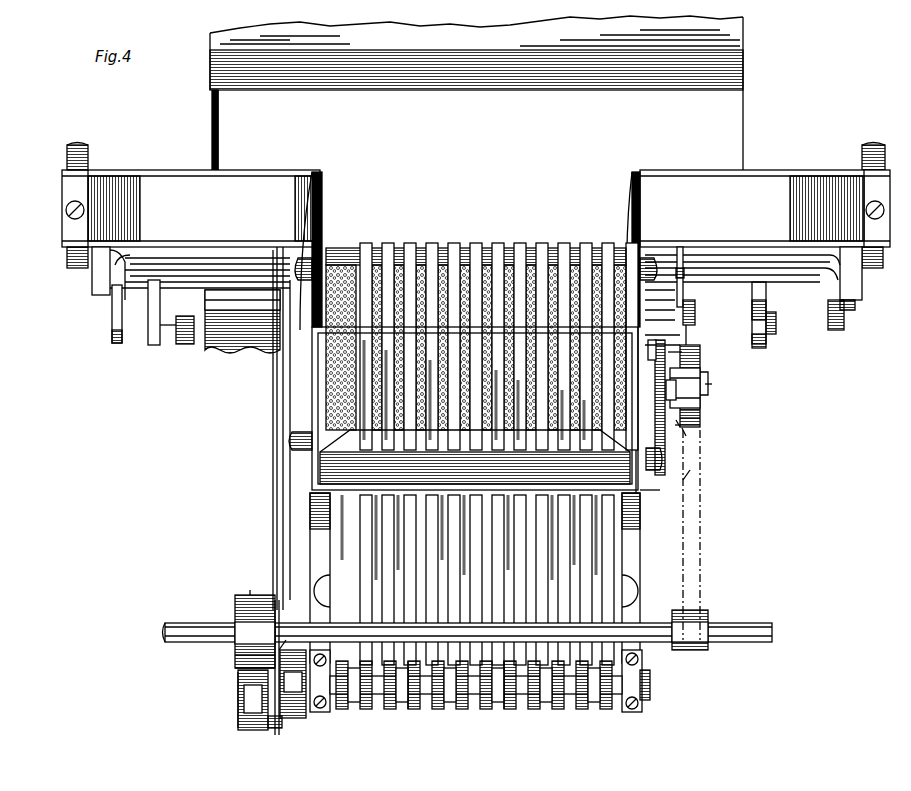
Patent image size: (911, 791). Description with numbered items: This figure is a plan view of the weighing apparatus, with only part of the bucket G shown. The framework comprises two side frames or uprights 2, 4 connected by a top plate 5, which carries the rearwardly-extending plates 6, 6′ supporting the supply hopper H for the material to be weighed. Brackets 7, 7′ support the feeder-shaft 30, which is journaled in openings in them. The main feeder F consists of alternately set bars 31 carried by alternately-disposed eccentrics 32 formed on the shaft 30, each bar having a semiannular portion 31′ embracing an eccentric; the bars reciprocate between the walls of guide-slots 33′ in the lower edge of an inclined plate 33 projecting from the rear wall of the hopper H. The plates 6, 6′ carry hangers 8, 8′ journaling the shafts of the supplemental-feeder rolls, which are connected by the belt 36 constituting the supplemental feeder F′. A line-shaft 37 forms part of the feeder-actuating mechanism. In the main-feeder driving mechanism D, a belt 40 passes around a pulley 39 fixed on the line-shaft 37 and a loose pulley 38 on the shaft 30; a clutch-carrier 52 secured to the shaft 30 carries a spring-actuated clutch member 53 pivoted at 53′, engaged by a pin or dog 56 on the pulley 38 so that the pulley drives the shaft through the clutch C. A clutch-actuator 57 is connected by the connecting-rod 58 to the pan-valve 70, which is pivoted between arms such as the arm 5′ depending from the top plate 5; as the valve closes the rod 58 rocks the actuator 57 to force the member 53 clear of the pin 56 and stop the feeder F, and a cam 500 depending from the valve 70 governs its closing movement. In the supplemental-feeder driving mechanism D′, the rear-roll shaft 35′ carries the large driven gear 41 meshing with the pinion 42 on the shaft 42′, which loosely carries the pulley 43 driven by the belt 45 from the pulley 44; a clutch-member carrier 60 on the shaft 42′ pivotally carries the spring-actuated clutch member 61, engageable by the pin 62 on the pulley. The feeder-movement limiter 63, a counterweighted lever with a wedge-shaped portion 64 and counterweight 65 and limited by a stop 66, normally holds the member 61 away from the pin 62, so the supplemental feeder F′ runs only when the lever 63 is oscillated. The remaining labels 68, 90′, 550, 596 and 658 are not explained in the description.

The side frame 2 is at (70, 155).
The side frame 4 is at (862, 155).
The top plate 5 is at (158, 178).
The bracket or arm 5′ is at (104, 292).
The rearwardly-extending plate 6 is at (318, 252).
The rearwardly-extending plate 6′ is at (630, 230).
The bracket 7 is at (322, 540).
The bracket 7′ is at (632, 562).
The bracket or hanger 8 is at (302, 266).
The bracket or hanger 8′ is at (658, 462).
The feeder-shaft 30 is at (650, 685).
The bar 31 is at (412, 262).
The semiannular portion 31′ is at (436, 700).
The eccentric 32 is at (480, 702).
The inclined plate 33 is at (622, 470).
The guide-slot 33′ is at (322, 452).
The shaft 35′ is at (686, 428).
The belt 36 is at (452, 262).
The line-shaft 37 is at (755, 636).
The pulley or belt-wheel 38 is at (250, 700).
The pulley or belt-wheel 39 is at (250, 594).
The belt 40 is at (242, 604).
The gear 41 is at (662, 476).
The pinion 42 is at (700, 372).
The shaft 42′ is at (712, 386).
The pulley or belt-wheel 43 is at (700, 410).
The pulley or band-wheel 44 is at (700, 645).
The belt 45 is at (684, 505).
The clutch-carrier 52 is at (302, 712).
The spring-actuated clutch member 53 is at (279, 722).
The pivot 53′ is at (284, 648).
The clutch member 56 is at (270, 724).
The clutch-actuator 57 is at (236, 652).
The connecting-rod 58 is at (272, 494).
The clutch-member carrier 60 is at (672, 390).
The spring-actuated clutch member 61 is at (695, 416).
The clutch member 62 is at (682, 420).
The feeder-movement limiter 63 is at (690, 305).
The wedge-shaped portion 64 is at (649, 352).
The counterweight 65 is at (700, 352).
The stop 66 is at (612, 270).
The rod 68 is at (680, 268).
The valve 70 is at (292, 255).
The bracket 90′ is at (812, 270).
The cam 500 is at (122, 342).
The stop 550 is at (760, 344).
The hanger 596 is at (180, 340).
The stop 658 is at (838, 325).
The clutch C is at (225, 700).
The driving mechanism D is at (243, 671).
The driving mechanism D′ is at (703, 535).
The feeder F is at (540, 260).
The supplemental feeder F′ is at (476, 260).
The bucket G is at (242, 350).
The supply device or hopper H is at (293, 440).